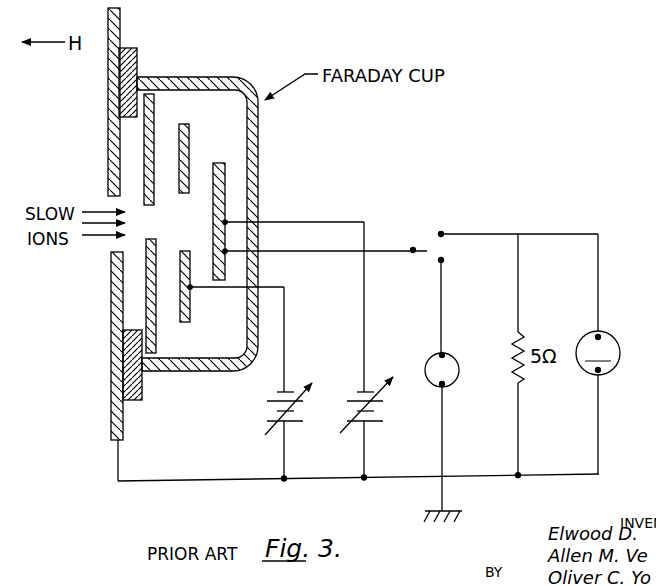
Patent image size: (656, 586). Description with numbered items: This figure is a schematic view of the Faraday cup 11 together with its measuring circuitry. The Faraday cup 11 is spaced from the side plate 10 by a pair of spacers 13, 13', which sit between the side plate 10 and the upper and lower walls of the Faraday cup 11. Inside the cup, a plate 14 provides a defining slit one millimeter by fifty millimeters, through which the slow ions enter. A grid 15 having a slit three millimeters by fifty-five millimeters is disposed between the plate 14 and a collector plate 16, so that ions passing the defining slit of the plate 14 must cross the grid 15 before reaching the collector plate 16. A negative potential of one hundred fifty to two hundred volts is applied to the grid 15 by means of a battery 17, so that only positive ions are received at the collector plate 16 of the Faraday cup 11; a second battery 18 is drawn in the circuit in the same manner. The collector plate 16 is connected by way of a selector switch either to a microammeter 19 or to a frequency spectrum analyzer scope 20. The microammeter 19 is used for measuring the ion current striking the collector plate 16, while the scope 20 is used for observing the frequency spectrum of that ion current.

The side plate 10 is at (108, 133).
The Faraday cup 11 is at (258, 138).
The spacer 13 is at (149, 78).
The spacer 13' is at (156, 367).
The plate 14 is at (154, 107).
The grid 15 is at (189, 136).
The collector plate 16 is at (213, 211).
The battery 17 is at (292, 425).
The variable voltage source 18 is at (372, 425).
The microammeter 19 is at (428, 362).
The frequency spectrum analyzer scope 20 is at (612, 340).